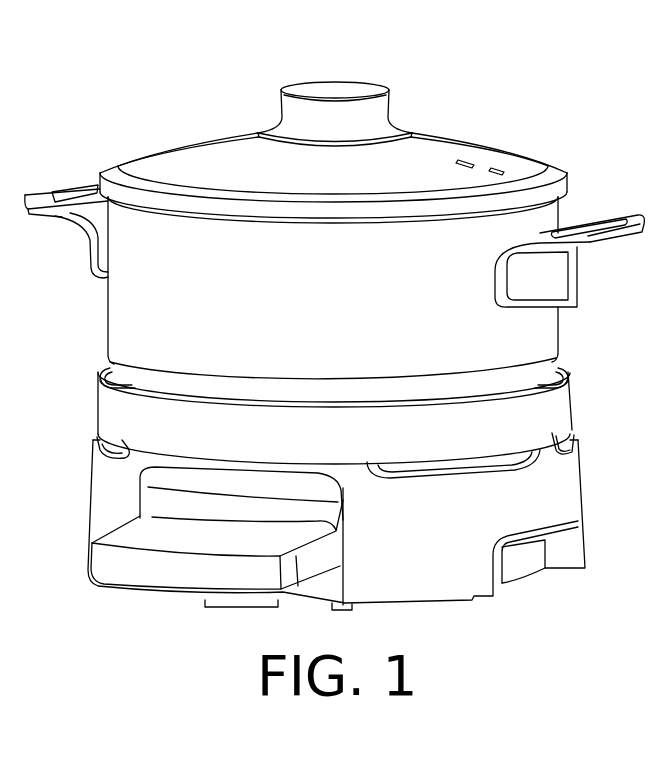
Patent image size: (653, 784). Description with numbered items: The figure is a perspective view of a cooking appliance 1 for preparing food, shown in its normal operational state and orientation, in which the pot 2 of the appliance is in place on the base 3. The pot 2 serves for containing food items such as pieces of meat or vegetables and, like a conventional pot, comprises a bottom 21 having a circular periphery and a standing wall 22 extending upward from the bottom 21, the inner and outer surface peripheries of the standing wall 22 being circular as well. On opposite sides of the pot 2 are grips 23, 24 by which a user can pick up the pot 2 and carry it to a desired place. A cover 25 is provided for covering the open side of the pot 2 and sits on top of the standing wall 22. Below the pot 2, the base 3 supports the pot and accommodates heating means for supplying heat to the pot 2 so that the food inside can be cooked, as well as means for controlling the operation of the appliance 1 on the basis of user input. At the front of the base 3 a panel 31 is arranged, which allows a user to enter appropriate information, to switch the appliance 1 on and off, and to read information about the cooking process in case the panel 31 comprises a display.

The appliance 1 is at (130, 113).
The pot 2 is at (540, 322).
The base 3 is at (558, 487).
The bottom 21 is at (144, 398).
The standing wall 22 is at (148, 327).
The grip 23 is at (42, 194).
The grip 24 is at (628, 221).
The cover 25 is at (449, 149).
The panel 31 is at (128, 530).